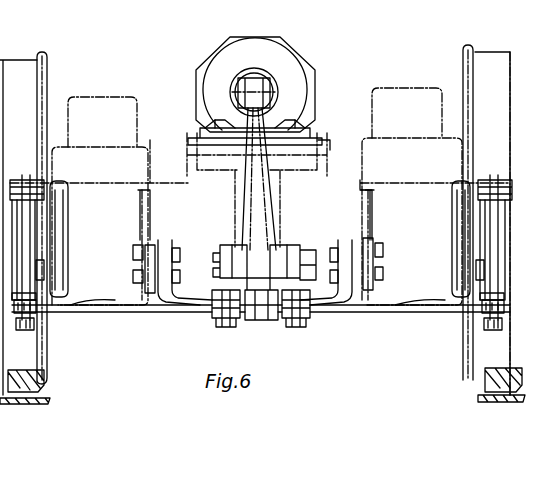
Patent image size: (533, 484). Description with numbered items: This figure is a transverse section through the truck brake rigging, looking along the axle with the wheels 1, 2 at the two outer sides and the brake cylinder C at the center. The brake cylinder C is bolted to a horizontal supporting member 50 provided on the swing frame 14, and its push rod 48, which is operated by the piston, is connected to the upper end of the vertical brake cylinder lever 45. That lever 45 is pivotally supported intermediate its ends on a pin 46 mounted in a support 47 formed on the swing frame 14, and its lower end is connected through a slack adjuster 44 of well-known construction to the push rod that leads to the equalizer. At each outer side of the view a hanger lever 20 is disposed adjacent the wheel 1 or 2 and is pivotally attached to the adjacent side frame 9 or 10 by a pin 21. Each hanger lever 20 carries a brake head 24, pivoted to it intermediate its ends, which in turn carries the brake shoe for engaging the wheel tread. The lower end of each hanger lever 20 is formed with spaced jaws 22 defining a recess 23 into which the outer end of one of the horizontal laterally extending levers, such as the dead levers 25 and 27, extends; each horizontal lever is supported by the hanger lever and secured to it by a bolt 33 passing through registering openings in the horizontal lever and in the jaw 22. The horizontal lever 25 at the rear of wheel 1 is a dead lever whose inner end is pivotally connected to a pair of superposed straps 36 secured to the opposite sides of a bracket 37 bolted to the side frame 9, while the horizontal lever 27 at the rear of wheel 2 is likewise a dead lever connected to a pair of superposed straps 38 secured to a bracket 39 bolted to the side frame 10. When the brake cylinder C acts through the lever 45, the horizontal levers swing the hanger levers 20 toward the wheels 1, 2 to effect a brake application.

The wheel 1 is at (494, 55).
The wheel 2 is at (24, 60).
The side frame 9 is at (409, 88).
The side frame 10 is at (103, 97).
The swing frame 14 is at (187, 136).
The hanger lever 20 is at (22, 240).
The pin 21 is at (45, 203).
The jaw 22 is at (24, 330).
The recess 23 is at (40, 310).
The brake head 24 is at (50, 262).
The horizontal lever 25 is at (398, 306).
The horizontal lever 27 is at (128, 308).
The bolt 33 is at (12, 300).
The straps 36 is at (300, 327).
The bracket 37 is at (355, 312).
The straps 38 is at (222, 327).
The bracket 39 is at (170, 312).
The slack adjuster 44 is at (258, 330).
The brake cylinder lever 45 is at (258, 197).
The pin 46 is at (230, 262).
The support 47 is at (290, 255).
The push rod 48 is at (270, 85).
The horizontal supporting member 50 is at (318, 145).
The brake cylinder C is at (290, 65).